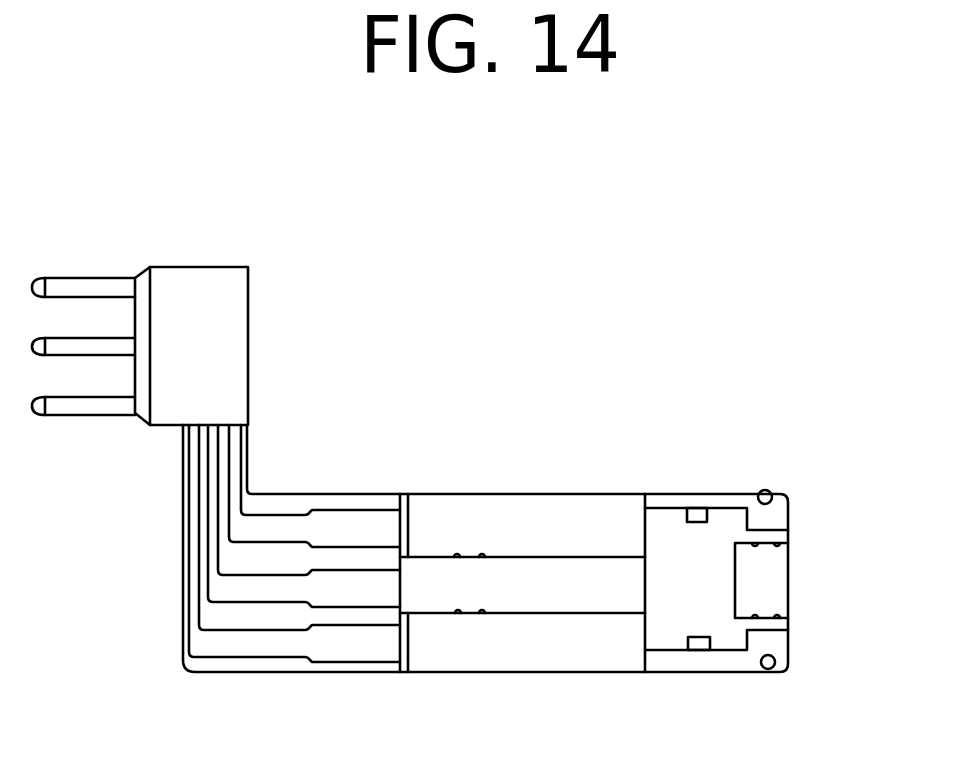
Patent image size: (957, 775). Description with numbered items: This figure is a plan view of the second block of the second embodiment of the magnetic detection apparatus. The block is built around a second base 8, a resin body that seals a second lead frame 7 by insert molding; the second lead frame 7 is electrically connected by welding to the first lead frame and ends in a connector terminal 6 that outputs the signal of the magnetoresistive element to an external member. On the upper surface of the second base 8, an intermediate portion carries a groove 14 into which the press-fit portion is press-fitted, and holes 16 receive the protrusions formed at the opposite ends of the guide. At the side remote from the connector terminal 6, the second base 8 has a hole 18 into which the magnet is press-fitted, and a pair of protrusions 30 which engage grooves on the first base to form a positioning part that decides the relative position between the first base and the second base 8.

The connector terminal 6 is at (105, 277).
The second lead frame 7 is at (308, 494).
The second base 8 is at (475, 515).
The groove 14 is at (520, 557).
The holes 16 is at (698, 508).
The hole 18 is at (767, 545).
The protrusions 30 is at (767, 494).